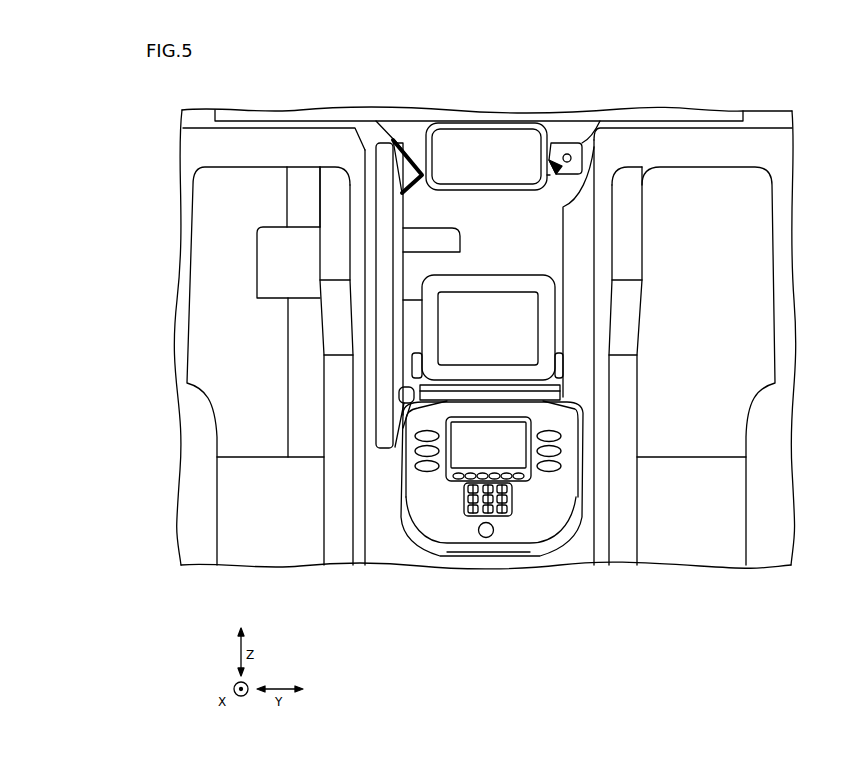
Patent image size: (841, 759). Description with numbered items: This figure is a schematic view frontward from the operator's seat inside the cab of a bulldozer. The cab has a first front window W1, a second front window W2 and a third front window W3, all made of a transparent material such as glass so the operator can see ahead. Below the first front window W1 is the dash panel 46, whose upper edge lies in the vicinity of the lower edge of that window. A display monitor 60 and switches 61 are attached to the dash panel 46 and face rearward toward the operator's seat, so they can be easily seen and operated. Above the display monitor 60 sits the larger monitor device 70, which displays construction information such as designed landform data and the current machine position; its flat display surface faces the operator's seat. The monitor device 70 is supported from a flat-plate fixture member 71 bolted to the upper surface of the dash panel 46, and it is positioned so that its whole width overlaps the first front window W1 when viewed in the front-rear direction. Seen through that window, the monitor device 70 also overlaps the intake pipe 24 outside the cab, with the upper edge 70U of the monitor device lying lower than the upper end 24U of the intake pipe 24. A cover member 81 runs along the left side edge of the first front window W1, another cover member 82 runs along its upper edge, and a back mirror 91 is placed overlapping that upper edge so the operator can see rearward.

The third front window W3 is at (248, 212).
The upper end of intake pipe 24U is at (297, 212).
The cover member 81 is at (383, 203).
The intake pipe 24 is at (433, 250).
The back mirror 91 is at (488, 160).
The upper edge of monitor device 70U is at (524, 268).
The cover member 82 is at (557, 170).
The first front window W1 is at (600, 183).
The second front window W2 is at (705, 212).
The dash panel 46 is at (440, 503).
The monitor device 70 is at (477, 333).
The display monitor 60 is at (490, 440).
The switches 61 is at (507, 476).
The fixture member 71 is at (518, 392).